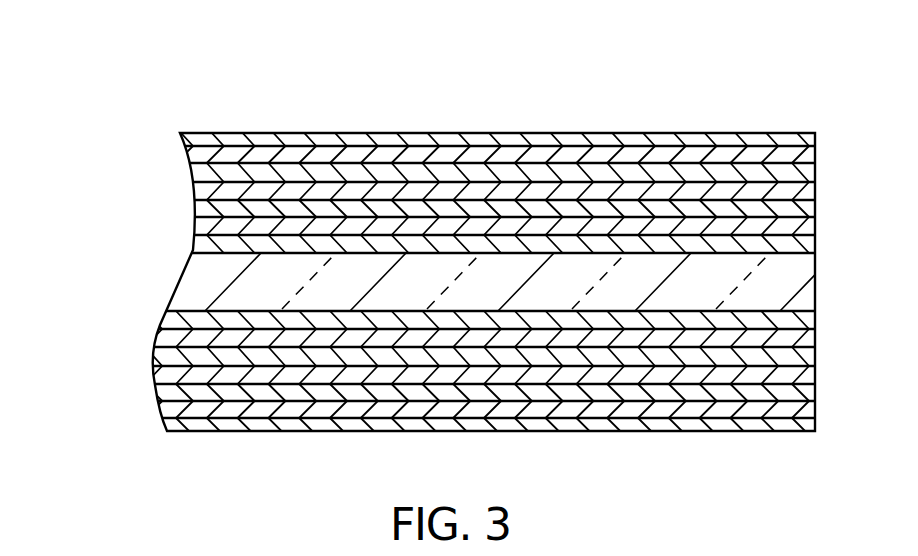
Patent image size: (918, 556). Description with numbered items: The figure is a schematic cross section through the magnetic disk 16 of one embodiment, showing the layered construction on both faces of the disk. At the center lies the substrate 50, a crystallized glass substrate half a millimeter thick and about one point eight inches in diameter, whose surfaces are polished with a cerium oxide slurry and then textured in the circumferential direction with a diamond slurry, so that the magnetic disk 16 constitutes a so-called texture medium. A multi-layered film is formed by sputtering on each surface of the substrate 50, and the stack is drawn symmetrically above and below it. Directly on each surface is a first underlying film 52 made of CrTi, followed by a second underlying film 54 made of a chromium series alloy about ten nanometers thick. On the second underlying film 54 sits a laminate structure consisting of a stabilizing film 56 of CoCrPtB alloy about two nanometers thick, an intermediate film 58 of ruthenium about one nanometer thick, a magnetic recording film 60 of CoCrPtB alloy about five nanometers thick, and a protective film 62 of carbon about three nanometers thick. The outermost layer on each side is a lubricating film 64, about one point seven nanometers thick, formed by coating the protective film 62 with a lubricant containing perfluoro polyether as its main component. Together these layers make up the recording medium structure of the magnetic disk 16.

The magnetic disk 16 is at (484, 110).
The substrate 50 is at (174, 284).
The first underlying film 52 is at (192, 246).
The second underlying film 54 is at (190, 229).
The stabilizing film 56 is at (192, 214).
The intermediate film 58 is at (190, 193).
The magnetic recording film 60 is at (192, 176).
The protective film 62 is at (186, 146).
The lubricating film 64 is at (182, 134).